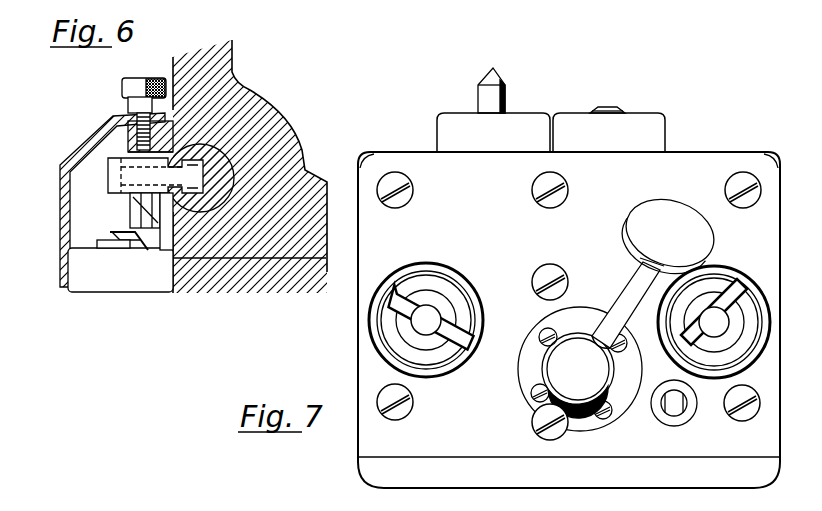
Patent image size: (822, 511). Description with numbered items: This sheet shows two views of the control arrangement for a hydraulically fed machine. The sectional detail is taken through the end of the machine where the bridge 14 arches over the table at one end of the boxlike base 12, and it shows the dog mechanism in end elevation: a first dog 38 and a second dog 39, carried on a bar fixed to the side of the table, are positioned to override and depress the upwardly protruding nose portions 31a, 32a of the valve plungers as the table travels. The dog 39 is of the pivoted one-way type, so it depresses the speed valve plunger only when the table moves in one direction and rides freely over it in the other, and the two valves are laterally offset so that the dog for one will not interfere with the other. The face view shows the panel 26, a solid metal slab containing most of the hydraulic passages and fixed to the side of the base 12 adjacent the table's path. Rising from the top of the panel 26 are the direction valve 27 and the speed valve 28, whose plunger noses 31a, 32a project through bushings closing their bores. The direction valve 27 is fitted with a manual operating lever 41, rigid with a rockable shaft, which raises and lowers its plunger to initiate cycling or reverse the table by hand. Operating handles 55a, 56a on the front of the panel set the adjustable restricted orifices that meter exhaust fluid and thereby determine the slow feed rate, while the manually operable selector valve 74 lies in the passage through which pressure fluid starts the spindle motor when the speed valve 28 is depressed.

In FIG. 6, the base 12 is at (187, 288).
In FIG. 6, the bridge 14 is at (234, 46).
In FIG. 6, the panel 26 is at (56, 289).
In FIG. 7, the panel 26 is at (737, 160).
In FIG. 7, the direction valve 27 is at (654, 124).
In FIG. 7, the speed valve 28 is at (440, 113).
In FIG. 6, the nose portion 31a is at (114, 240).
In FIG. 7, the nose portion 31a is at (612, 107).
In FIG. 6, the nose portion 32a is at (147, 248).
In FIG. 7, the nose portion 32a is at (489, 79).
In FIG. 6, the first dog 38 is at (118, 212).
In FIG. 6, the second dog 39 is at (108, 192).
In FIG. 7, the manual operating lever 41 is at (664, 212).
In FIG. 7, the operating handle 55a is at (468, 340).
In FIG. 7, the operating handle 56a is at (746, 276).
In FIG. 7, the selector valve 74 is at (685, 412).